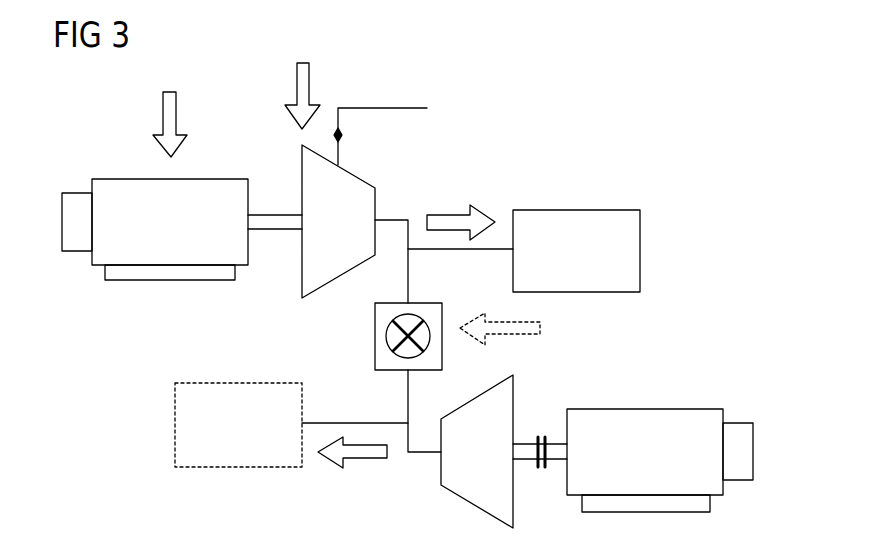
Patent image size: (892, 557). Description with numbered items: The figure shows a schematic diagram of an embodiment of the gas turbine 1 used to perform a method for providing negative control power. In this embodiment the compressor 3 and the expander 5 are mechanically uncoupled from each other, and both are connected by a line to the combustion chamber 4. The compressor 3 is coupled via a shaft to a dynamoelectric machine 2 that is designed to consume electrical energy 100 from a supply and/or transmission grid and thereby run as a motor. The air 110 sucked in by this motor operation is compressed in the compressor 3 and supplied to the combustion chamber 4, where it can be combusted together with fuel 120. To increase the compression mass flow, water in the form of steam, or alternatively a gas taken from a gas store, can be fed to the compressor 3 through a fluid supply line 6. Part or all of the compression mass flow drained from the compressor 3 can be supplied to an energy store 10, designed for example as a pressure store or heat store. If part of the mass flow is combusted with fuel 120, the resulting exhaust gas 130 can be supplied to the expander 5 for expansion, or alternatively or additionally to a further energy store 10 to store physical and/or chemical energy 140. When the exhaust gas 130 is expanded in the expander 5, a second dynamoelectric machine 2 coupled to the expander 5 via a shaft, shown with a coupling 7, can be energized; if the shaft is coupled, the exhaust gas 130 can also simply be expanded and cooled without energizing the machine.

The gas turbine 1 is at (558, 111).
The dynamoelectric machine 2 is at (222, 179).
The compressor 3 is at (342, 280).
The combustion chamber 4 is at (375, 352).
The expander 5 is at (478, 509).
The fluid supply line 6 is at (392, 106).
The coupling / clutch 7 is at (543, 470).
The energy store 10 is at (640, 248).
The electrical energy 100 is at (163, 103).
The air 110 is at (297, 81).
The fuel 120 is at (540, 328).
The exhaust gas 130 is at (408, 392).
The physical and/or chemical energy 140 is at (452, 212).